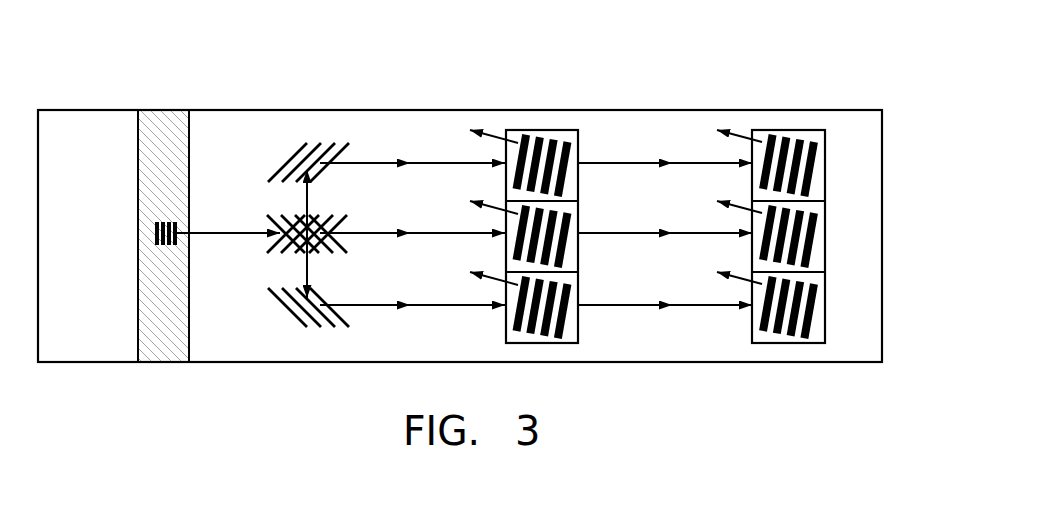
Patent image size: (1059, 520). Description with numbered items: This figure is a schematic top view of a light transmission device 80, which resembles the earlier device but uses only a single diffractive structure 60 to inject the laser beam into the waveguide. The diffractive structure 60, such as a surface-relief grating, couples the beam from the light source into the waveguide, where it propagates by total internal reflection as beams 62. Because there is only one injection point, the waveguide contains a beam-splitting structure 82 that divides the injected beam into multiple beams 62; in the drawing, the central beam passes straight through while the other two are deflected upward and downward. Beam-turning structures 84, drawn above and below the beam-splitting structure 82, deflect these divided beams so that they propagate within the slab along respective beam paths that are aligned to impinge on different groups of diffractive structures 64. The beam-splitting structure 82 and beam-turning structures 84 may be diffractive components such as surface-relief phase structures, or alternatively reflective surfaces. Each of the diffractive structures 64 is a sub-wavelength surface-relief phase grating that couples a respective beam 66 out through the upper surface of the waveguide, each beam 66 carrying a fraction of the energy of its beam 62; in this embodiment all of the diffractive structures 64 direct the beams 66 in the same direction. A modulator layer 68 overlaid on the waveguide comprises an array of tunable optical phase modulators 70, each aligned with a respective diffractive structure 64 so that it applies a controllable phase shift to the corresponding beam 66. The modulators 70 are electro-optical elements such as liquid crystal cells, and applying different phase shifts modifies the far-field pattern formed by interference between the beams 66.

The light transmission device 80 is at (827, 70).
The diffractive structure 60 is at (153, 233).
The beam-turning structures 84 is at (292, 154).
The beam-splitting structure 82 is at (322, 217).
The beams 62 is at (382, 163).
The beams 66 is at (498, 131).
The diffractive structures 64 is at (566, 143).
The modulator layer 68 is at (876, 356).
The tunable optical phase modulators 70 is at (826, 156).